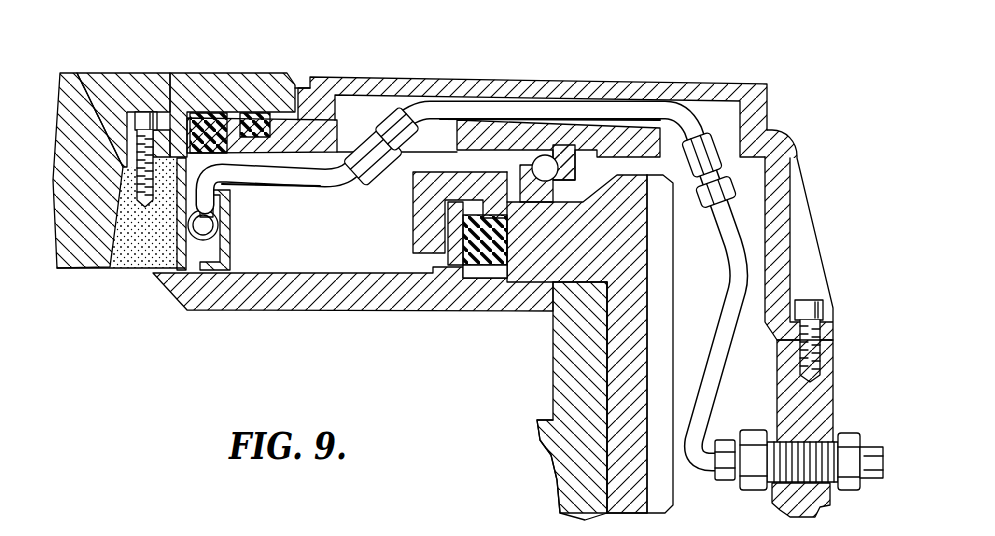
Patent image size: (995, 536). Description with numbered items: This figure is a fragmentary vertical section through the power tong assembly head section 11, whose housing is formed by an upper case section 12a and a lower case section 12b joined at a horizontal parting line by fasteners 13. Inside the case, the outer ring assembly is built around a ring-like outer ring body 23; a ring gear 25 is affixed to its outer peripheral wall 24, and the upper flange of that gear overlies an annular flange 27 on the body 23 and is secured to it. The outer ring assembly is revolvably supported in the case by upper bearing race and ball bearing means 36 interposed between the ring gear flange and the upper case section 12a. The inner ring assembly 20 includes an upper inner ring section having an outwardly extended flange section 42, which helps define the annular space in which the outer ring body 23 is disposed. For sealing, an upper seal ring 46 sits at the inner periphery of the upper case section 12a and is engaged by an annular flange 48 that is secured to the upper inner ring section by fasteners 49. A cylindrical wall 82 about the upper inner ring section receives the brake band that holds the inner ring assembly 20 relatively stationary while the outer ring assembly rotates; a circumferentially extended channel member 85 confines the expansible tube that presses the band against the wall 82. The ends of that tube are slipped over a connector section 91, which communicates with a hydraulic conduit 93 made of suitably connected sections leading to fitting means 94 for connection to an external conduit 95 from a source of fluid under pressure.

The power tong assembly head section 11 is at (667, 80).
The upper case section 12a is at (796, 148).
The lower case section 12b is at (835, 360).
The fasteners 13 is at (813, 302).
The inner ring assembly 20 is at (118, 273).
The outer ring body 23 is at (557, 470).
The outer peripheral wall 24 is at (606, 398).
The ring gear 25 is at (627, 498).
The annular flange 27 is at (577, 313).
The upper bearing race and ball bearing means 36 is at (548, 158).
The outwardly extended flange section 42 is at (380, 300).
The upper seal ring 46 is at (213, 127).
The annular flange 48 is at (197, 78).
The fasteners 49 is at (146, 117).
The cylindrical wall 82 is at (179, 245).
The channel member 85 is at (231, 217).
The connector section 91 is at (217, 238).
The hydraulic conduit 93 is at (330, 185).
The fitting means 94 is at (822, 437).
The external conduit 95 is at (872, 457).